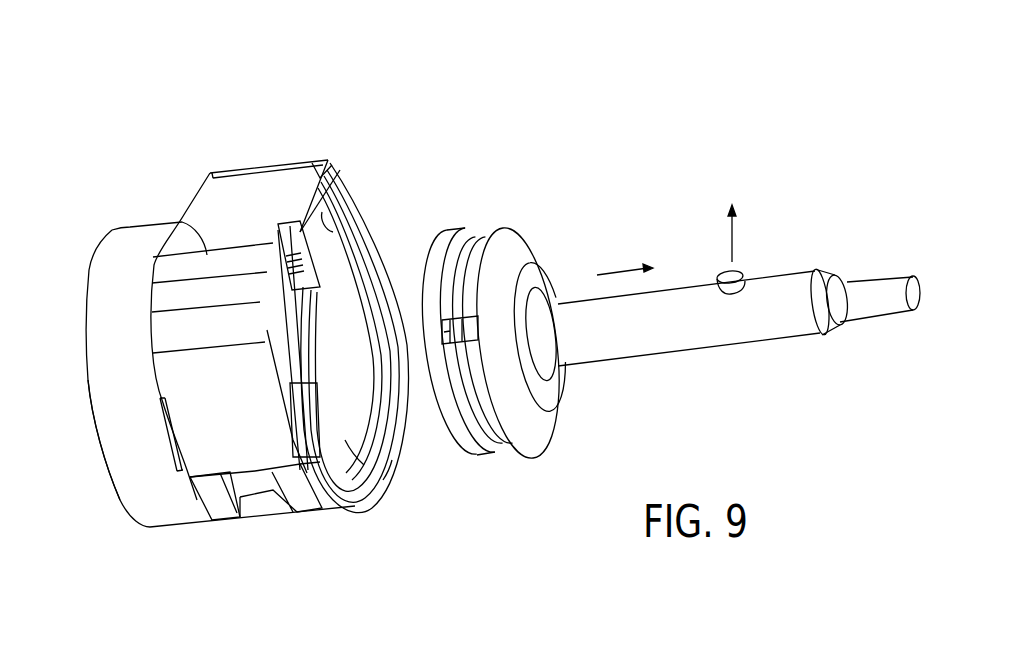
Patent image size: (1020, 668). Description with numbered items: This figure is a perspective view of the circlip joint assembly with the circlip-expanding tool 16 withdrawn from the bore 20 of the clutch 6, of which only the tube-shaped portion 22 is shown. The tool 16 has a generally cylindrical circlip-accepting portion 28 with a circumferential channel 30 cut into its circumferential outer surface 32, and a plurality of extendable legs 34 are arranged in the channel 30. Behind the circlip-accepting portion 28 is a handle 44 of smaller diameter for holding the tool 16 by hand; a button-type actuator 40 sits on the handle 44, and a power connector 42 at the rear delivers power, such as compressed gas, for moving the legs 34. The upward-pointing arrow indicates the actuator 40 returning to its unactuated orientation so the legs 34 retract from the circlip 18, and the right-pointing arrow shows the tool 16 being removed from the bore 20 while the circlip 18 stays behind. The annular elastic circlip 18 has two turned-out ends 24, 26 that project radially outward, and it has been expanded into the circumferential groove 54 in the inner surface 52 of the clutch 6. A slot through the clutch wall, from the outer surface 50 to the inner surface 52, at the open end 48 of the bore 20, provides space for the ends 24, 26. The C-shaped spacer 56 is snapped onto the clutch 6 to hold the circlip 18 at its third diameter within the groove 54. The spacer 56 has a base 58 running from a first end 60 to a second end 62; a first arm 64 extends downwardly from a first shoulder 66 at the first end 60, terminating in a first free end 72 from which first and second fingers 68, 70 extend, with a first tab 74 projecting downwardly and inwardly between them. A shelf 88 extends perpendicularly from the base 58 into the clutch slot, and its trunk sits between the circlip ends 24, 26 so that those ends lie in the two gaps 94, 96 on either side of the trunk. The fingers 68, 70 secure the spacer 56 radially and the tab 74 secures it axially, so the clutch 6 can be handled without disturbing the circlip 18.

The clutch 6 is at (119, 417).
The tube-shaped portion 22 is at (172, 522).
The circlip-expanding tool 16 is at (602, 164).
The circlip 18 is at (390, 395).
The bore 20 is at (339, 352).
The first turned-out end 24 is at (285, 252).
The second turned-out end 26 is at (338, 203).
The circlip-accepting portion 28 is at (530, 423).
The circumferential channel 30 is at (478, 457).
The circumferential outer surface 32 is at (487, 227).
The extendable legs 34 is at (478, 316).
The actuator 40 is at (733, 272).
The power connector 42 is at (913, 298).
The handle 44 is at (687, 345).
The open end 48 is at (353, 430).
The outer surface 50 is at (140, 497).
The inner surface 52 is at (387, 473).
The circumferential groove 54 is at (378, 352).
The spacer 56 is at (192, 196).
The base 58 is at (220, 186).
The first end 60 is at (180, 222).
The second end 62 is at (272, 174).
The first arm 64 is at (188, 408).
The first shoulder 66 is at (173, 297).
The first finger 68 is at (307, 503).
The second finger 70 is at (210, 490).
The first free end 72 is at (193, 472).
The first tab 74 is at (250, 484).
The shelf 88 is at (310, 207).
The first gap 94 is at (219, 185).
The second gap 96 is at (328, 160).